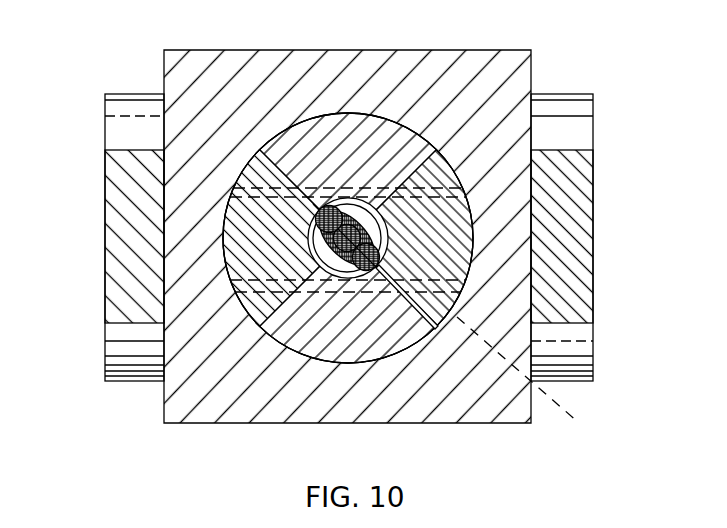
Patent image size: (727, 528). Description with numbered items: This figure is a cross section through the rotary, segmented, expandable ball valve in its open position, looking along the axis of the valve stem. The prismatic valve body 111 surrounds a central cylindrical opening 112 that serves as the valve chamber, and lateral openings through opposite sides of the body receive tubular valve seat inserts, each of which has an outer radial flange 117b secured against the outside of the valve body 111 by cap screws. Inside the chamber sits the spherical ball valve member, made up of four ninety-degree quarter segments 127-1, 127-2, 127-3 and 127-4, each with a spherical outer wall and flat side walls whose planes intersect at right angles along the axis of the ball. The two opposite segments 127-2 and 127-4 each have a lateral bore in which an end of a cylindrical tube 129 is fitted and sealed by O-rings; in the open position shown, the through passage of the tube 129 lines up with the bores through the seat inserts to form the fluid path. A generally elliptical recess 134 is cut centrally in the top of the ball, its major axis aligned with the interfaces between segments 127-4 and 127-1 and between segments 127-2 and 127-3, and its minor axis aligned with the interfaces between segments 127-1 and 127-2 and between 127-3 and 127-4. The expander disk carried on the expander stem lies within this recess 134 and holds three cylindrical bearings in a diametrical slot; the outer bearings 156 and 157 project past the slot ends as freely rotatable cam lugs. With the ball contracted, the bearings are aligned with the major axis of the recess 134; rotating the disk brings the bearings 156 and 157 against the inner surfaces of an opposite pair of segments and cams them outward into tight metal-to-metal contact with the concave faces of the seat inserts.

The valve body 111 is at (513, 50).
The central cylindrical opening 112 is at (377, 115).
The outer radial flange 117b is at (107, 176).
The quarter segment 127-1 is at (410, 128).
The quarter segment 127-2 is at (437, 173).
The quarter segment 127-3 is at (372, 340).
The quarter segment 127-4 is at (253, 307).
The cylindrical tube 129 is at (534, 384).
The elliptical recess 134 is at (348, 202).
The cylindrical bearing 156 is at (388, 261).
The cylindrical bearing 157 is at (327, 212).